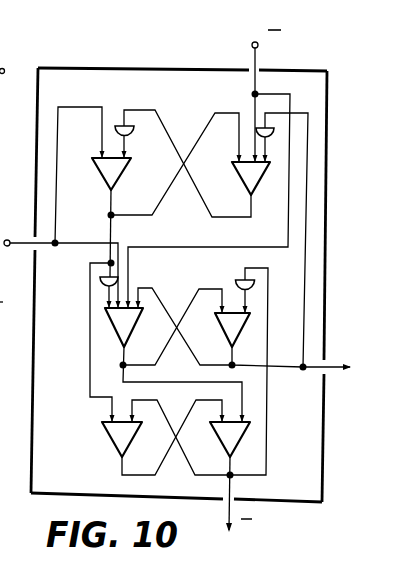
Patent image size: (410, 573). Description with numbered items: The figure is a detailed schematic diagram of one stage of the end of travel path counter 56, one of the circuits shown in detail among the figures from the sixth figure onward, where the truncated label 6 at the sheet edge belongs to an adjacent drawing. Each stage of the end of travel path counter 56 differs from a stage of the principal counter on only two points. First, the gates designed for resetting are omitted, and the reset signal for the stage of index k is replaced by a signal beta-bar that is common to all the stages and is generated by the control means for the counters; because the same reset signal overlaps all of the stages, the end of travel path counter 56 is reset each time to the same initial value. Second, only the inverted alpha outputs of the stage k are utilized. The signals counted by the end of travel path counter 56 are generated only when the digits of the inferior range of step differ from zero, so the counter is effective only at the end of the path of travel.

The end of travel path counter 56 is at (327, 183).
The cell index (k-th stage) k is at (186, 289).
The adjacent block (truncated numeral) 6 is at (14, 206).